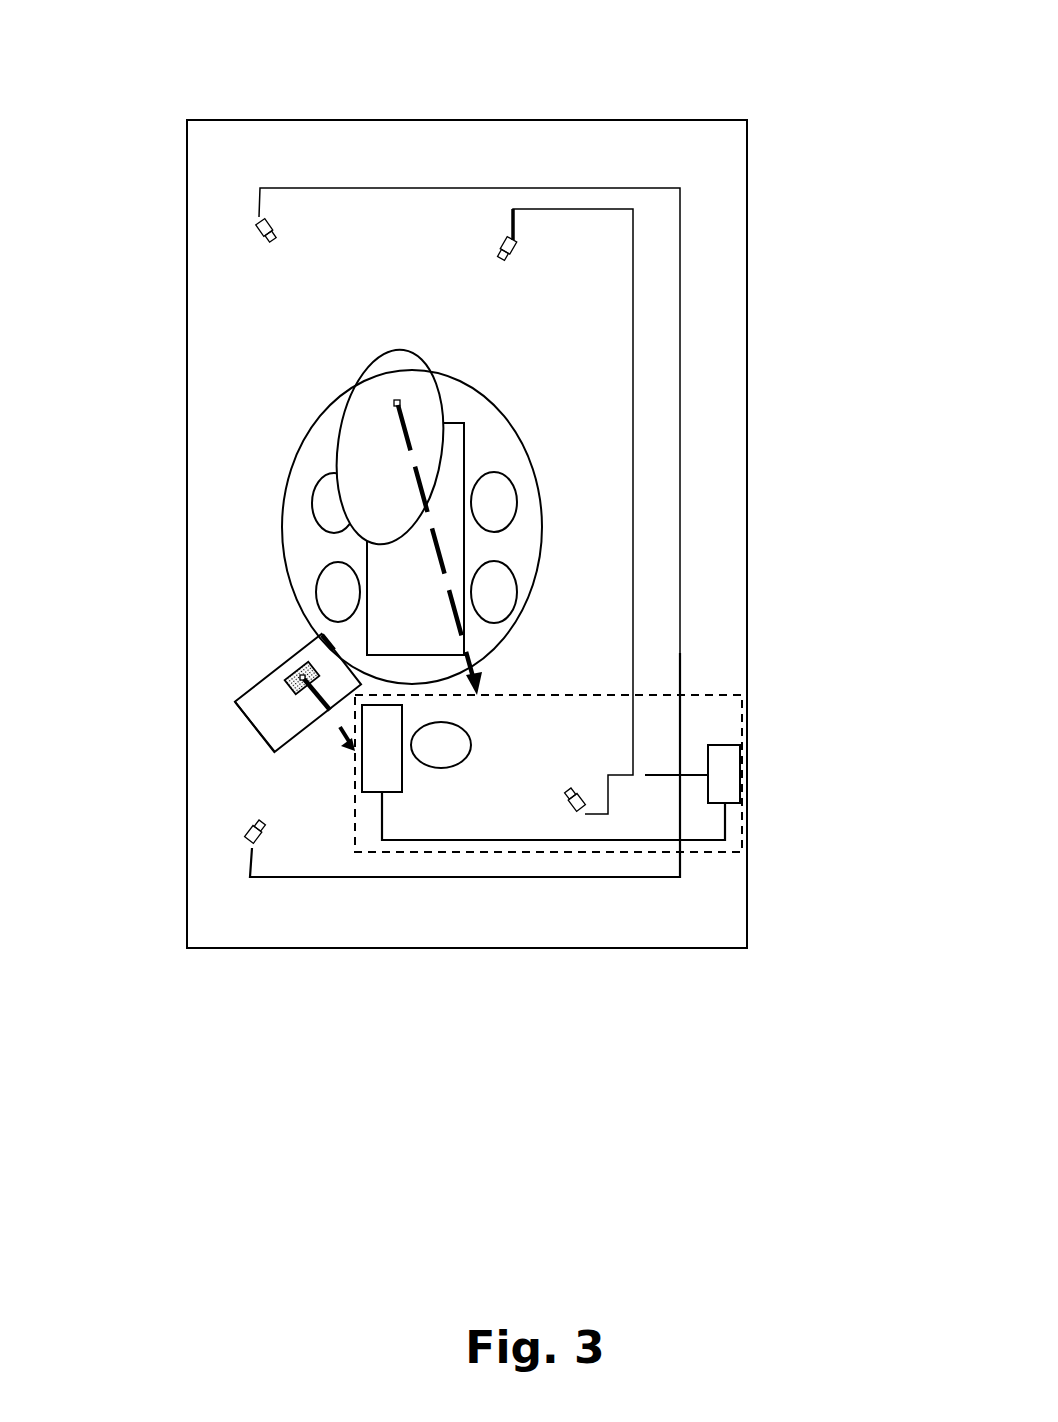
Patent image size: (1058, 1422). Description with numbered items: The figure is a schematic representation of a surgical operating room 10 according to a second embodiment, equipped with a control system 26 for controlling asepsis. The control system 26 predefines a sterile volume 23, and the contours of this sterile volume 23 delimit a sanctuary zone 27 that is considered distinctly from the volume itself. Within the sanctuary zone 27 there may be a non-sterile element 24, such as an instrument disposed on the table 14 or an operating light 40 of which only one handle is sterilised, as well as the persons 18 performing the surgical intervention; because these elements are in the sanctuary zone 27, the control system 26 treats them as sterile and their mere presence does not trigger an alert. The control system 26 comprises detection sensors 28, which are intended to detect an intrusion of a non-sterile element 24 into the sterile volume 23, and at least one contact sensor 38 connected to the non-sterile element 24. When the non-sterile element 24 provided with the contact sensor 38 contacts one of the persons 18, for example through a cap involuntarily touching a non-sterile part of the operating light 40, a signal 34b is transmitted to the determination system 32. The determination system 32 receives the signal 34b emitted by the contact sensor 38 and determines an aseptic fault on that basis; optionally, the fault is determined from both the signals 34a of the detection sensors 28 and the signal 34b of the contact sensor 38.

The surgical operating room 10 is at (381, 114).
The table 14 is at (268, 743).
The persons 18 is at (352, 598).
The sterile volume 23 is at (525, 421).
The non-sterile element 24 is at (290, 685).
The control system 26 is at (598, 690).
The sanctuary zone 27 is at (480, 418).
The detection sensor 28 is at (258, 217).
The determination system 32 is at (735, 772).
The signal 34a is at (318, 188).
The signal 34b is at (415, 487).
The contact sensor 38 is at (395, 402).
The operating light 40 is at (382, 350).